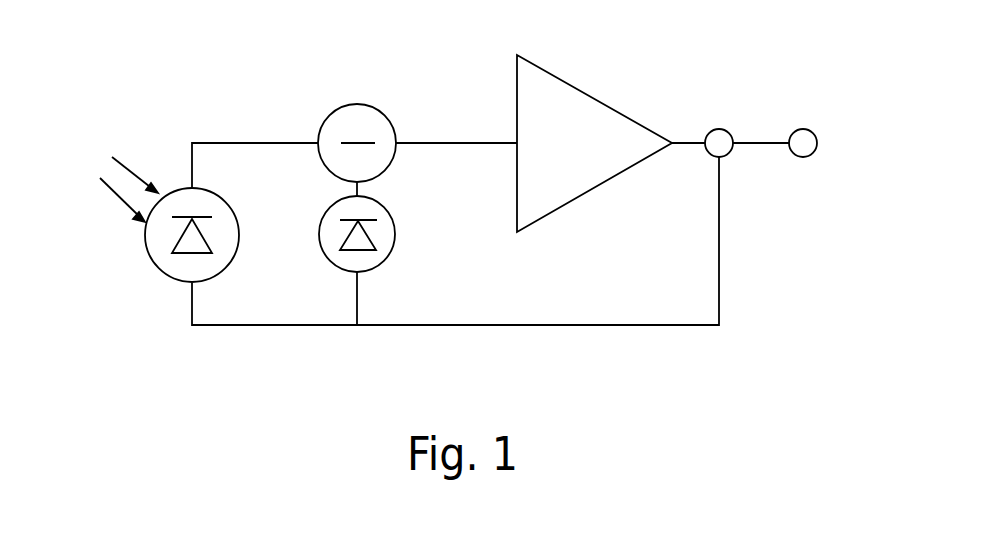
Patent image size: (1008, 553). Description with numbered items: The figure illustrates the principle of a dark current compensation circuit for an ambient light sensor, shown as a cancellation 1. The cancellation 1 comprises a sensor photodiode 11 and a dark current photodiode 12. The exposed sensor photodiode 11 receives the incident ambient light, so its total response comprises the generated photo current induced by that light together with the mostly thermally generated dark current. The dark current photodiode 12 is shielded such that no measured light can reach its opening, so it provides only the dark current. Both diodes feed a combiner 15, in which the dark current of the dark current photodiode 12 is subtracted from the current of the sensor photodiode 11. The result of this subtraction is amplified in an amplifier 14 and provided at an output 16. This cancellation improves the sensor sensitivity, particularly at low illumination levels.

The cancellation 1 is at (174, 79).
The sensor photodiode 11 is at (145, 237).
The dark current photodiode 12 is at (326, 262).
The amplifier 14 is at (585, 195).
The combiner 15 is at (355, 104).
The output 16 is at (818, 144).